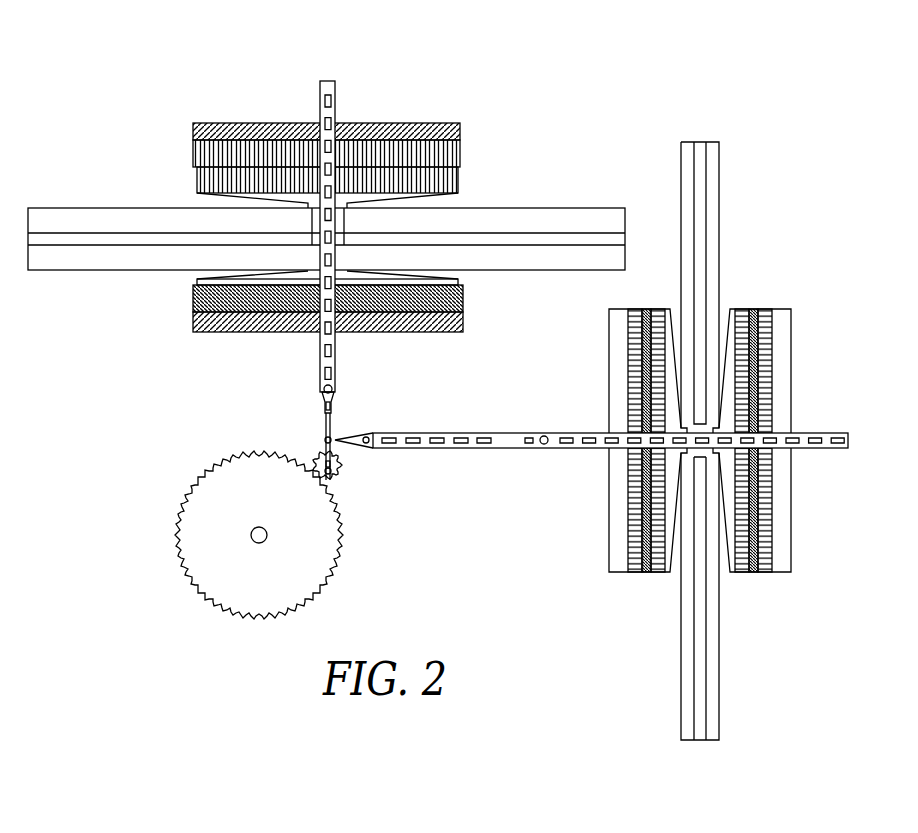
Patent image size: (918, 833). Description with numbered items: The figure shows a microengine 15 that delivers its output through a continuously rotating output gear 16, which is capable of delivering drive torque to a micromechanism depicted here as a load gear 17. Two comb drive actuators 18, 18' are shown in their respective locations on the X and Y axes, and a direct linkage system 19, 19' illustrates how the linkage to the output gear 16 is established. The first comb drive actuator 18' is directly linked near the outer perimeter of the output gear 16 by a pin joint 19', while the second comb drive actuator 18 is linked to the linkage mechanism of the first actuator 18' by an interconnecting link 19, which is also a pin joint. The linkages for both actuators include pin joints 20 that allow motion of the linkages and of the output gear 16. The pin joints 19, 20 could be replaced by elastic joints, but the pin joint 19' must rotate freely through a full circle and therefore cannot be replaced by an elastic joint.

The microengine 15 is at (55, 392).
The output gear 16 is at (342, 458).
The load gear 17 is at (342, 557).
The second comb drive actuator 18 is at (728, 441).
The first comb drive actuator 18' is at (326, 227).
The interconnecting link 19 is at (291, 425).
The pin joint 19' is at (590, 478).
The pin joints 20 is at (544, 436).